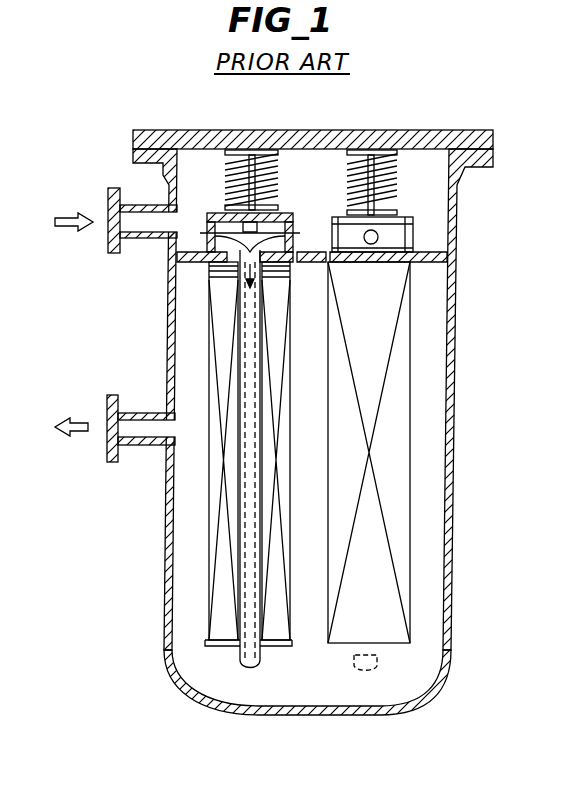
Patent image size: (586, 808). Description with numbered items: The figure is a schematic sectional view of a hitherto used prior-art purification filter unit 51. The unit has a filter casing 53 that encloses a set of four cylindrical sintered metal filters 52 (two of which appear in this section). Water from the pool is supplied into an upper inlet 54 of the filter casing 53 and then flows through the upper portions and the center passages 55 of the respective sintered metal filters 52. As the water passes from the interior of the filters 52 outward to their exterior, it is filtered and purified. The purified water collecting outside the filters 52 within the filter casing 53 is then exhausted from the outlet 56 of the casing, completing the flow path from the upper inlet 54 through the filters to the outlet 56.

The purification filter unit 51 is at (324, 422).
The cylindrical sintered metal filter 52 is at (203, 628).
The filter casing 53 is at (452, 492).
The upper inlet 54 is at (113, 222).
The center passage 55 is at (248, 652).
The outlet 56 is at (112, 428).